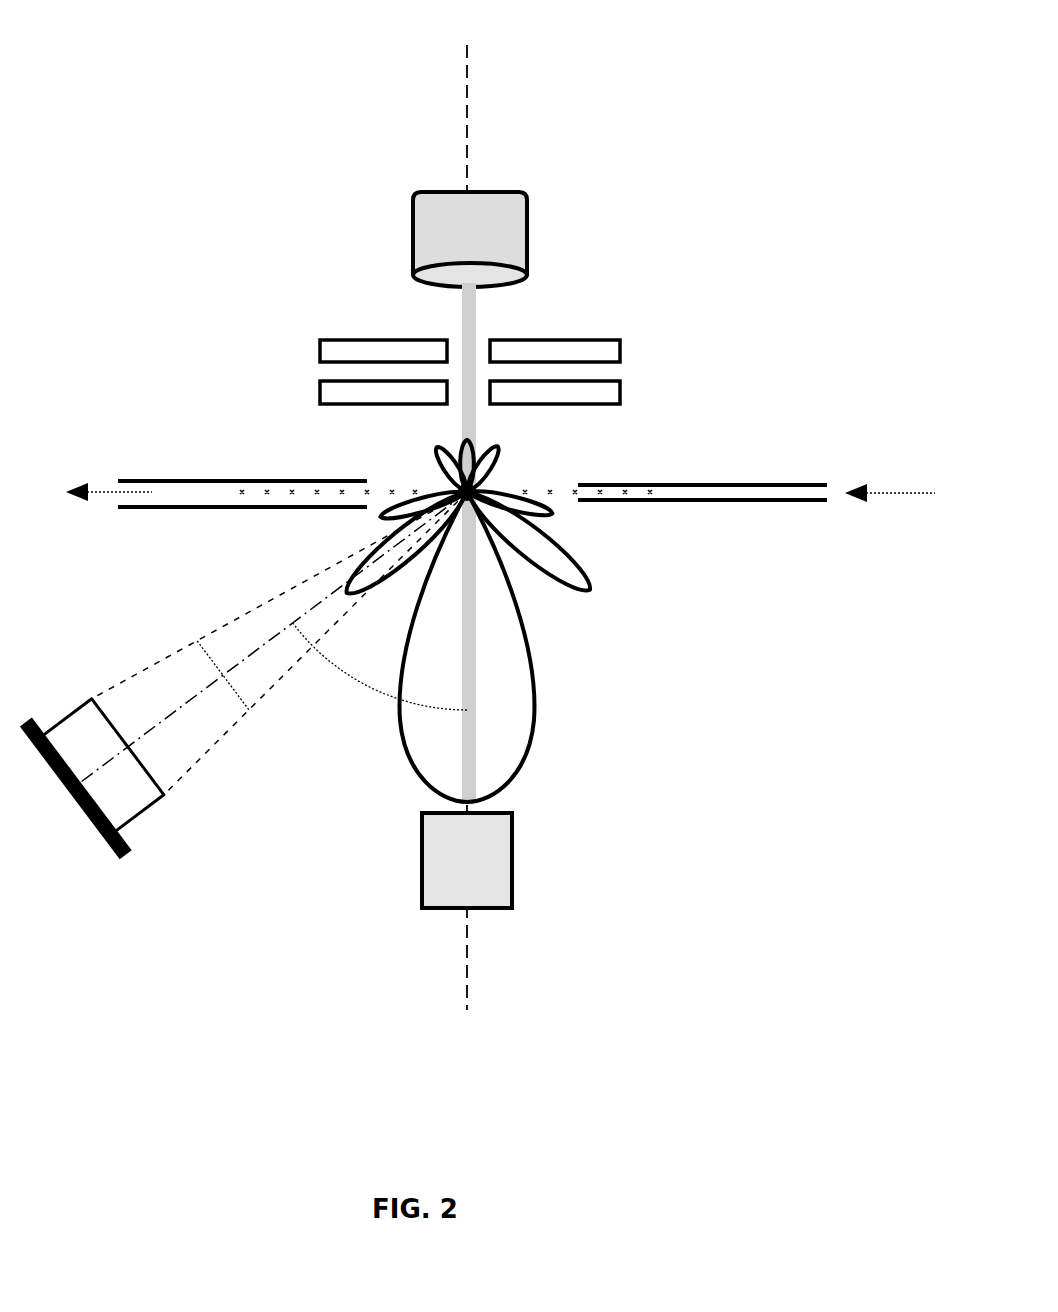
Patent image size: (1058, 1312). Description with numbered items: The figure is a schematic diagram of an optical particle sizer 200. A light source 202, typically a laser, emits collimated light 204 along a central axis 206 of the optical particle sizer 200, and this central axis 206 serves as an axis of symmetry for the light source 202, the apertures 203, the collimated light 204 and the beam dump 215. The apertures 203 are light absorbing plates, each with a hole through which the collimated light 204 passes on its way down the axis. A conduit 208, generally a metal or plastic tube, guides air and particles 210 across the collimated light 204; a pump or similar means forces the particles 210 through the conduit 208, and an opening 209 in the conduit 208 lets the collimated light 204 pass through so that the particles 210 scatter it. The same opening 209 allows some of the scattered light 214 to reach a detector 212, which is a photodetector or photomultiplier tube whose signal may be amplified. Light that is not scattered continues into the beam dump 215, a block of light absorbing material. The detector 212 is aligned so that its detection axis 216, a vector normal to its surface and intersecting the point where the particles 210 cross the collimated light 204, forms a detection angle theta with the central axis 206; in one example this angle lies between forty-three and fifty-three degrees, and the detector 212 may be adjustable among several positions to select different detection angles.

The optical particle sizer 200 is at (186, 62).
The light source 202 is at (432, 232).
The apertures 203 is at (604, 352).
The collimated light 204 is at (478, 418).
The central axis 206 is at (468, 103).
The conduit 208 is at (218, 478).
The opening 209 is at (407, 461).
The particles 210 is at (268, 494).
The detector 212 is at (124, 850).
The scattered light 214 is at (549, 634).
The beam dump 215 is at (500, 866).
The detection axis 216 is at (273, 642).